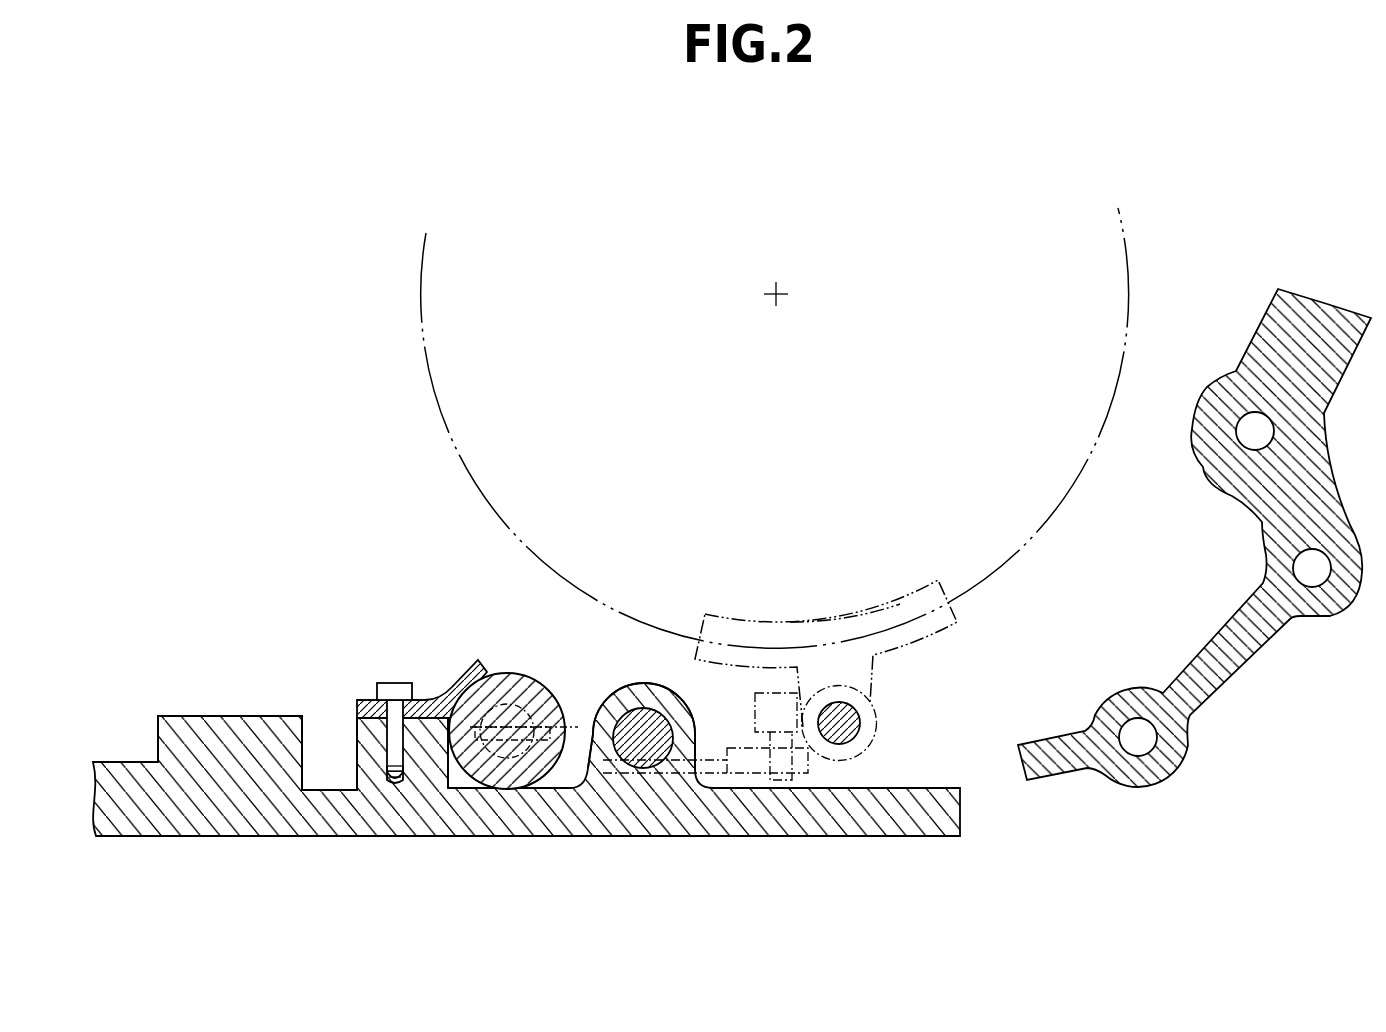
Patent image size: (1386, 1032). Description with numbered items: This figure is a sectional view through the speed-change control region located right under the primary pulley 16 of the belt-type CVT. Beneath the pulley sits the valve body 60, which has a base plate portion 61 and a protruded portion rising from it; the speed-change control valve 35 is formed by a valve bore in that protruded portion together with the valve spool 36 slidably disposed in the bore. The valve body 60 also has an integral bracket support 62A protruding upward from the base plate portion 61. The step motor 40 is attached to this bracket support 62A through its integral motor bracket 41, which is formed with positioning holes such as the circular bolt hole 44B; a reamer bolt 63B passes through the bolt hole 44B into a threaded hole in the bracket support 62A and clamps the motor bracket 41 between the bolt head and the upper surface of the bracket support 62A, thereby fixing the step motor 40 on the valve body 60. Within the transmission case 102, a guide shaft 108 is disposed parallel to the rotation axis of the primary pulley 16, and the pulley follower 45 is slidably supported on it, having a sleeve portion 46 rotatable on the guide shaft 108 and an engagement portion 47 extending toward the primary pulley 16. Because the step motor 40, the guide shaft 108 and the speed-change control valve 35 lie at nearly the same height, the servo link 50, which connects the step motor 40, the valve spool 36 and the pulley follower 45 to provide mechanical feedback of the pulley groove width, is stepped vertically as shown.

The primary pulley 16 is at (1136, 247).
The speed-change control valve 35 is at (625, 786).
The valve spool 36 is at (655, 748).
The step motor 40 is at (556, 678).
The motor bracket 41 is at (420, 705).
The bolt hole 44B is at (395, 780).
The pulley follower 45 is at (767, 612).
The sleeve portion 46 is at (864, 752).
The engagement portion 47 is at (827, 618).
The servo link 50 is at (575, 745).
The valve body 60 is at (210, 706).
The base plate portion 61 is at (347, 787).
The bracket support 62A is at (422, 768).
The reamer bolt 63B is at (393, 692).
The transmission case 102 is at (1251, 657).
The guide shaft 108 is at (861, 720).